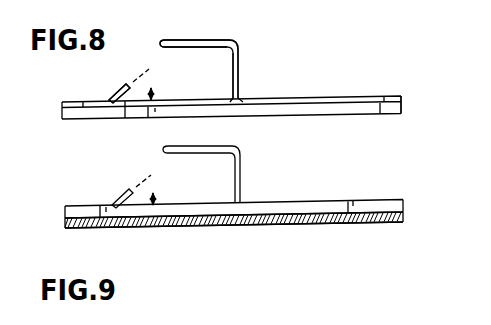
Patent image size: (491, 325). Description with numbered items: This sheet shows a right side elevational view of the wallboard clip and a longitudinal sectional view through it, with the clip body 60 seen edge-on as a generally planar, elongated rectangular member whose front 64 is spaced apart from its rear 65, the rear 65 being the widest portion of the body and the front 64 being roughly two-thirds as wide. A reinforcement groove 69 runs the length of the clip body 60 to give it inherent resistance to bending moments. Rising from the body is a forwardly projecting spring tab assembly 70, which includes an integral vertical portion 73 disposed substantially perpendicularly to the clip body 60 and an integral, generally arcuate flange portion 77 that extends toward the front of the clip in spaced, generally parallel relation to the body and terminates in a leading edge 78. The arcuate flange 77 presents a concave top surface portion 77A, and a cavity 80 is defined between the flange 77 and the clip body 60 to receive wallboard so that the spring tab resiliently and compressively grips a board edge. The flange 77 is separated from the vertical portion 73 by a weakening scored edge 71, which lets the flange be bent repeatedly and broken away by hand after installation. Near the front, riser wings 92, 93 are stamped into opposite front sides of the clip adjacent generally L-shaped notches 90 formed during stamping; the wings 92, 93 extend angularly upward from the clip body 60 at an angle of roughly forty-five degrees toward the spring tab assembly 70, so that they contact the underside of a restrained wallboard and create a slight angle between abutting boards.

In FIG. 8, the clip body 60 is at (285, 208).
In FIG. 8, the front of the body 64 is at (50, 120).
In FIG. 9, the front of the body 64 is at (410, 318).
In FIG. 8, the rear of the body 65 is at (413, 122).
In FIG. 8, the reinforcement groove 69 is at (405, 218).
In FIG. 8, the spring tab assembly 70 is at (204, 35).
In FIG. 9, the spring tab assembly 70 is at (466, 324).
In FIG. 8, the scored edge 71 is at (241, 49).
In FIG. 8, the vertical portion 73 is at (240, 80).
In FIG. 8, the flange portion 77 is at (204, 48).
In FIG. 8, the concave top surface portion 77A is at (178, 147).
In FIG. 8, the leading edge 78 is at (163, 43).
In FIG. 9, the leading edge 78 is at (490, 314).
In FIG. 8, the cavity 80 is at (172, 90).
In FIG. 8, the L-shaped notch 90 is at (129, 119).
In FIG. 8, the riser wing 92 is at (121, 99).
In FIG. 8, the riser wing 93 is at (115, 201).